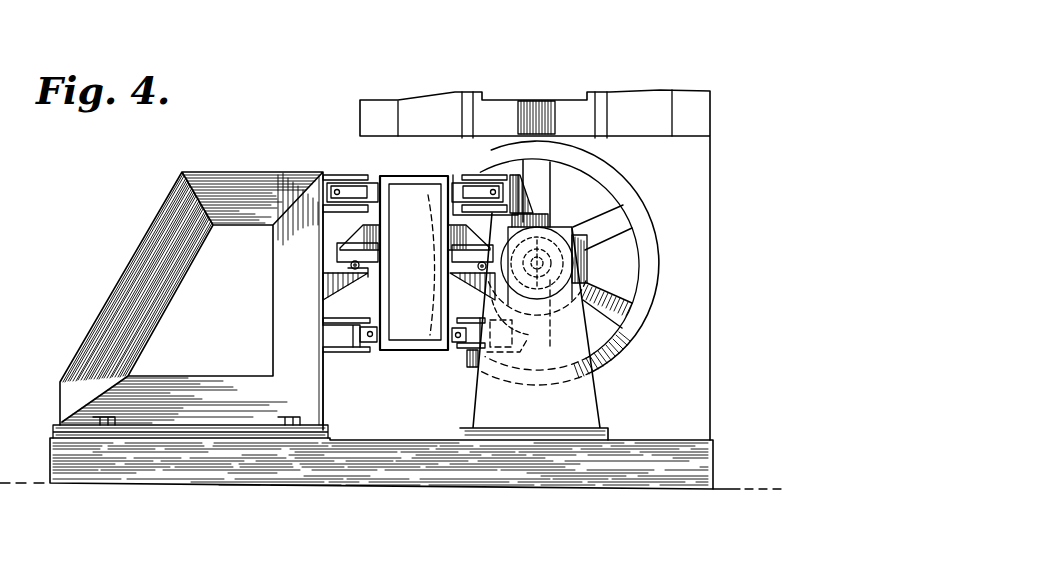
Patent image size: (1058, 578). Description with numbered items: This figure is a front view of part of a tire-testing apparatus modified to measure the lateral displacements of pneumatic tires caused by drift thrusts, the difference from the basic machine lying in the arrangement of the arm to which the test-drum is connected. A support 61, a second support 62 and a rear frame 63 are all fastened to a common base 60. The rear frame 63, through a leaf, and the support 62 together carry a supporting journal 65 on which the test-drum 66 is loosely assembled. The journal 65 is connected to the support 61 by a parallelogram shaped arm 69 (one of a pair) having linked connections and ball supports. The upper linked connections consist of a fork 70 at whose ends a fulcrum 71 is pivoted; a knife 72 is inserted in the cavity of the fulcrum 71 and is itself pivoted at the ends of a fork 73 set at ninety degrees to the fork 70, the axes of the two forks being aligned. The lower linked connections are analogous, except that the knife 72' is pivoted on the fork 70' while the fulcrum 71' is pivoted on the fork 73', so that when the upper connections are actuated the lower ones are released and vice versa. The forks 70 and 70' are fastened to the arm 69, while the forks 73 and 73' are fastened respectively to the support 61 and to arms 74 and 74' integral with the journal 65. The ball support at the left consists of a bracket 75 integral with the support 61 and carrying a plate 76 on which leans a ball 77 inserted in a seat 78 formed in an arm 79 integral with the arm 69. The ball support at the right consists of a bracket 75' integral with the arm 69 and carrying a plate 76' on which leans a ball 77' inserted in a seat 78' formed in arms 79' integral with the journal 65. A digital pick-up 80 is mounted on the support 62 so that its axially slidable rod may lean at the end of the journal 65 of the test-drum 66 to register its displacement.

The base 60 is at (133, 468).
The support 61 is at (162, 230).
The support 62 is at (585, 404).
The rear frame 63 is at (700, 289).
The supporting journal 65 is at (505, 265).
The test-drum 66 is at (648, 330).
The parallelogram shaped arm 69 is at (415, 353).
The fork 70 is at (415, 170).
The fork 70' is at (413, 361).
The fulcrum 71 is at (315, 262).
The fulcrum 71' is at (341, 358).
The knife 72 is at (415, 171).
The knife 72' is at (404, 365).
The fork 73 is at (407, 165).
The fork 73' is at (393, 388).
The arm 74 is at (548, 194).
The arm 74' is at (530, 332).
The bracket 75 is at (325, 319).
The bracket 75' is at (439, 309).
The plate 76 is at (324, 290).
The plate 76' is at (444, 286).
The ball 77 is at (319, 275).
The ball 77' is at (439, 267).
The seat 78 is at (330, 255).
The seat 78' is at (443, 248).
The arm 79 is at (379, 223).
The arm 79' is at (469, 234).
The digital pick-up 80 is at (552, 283).